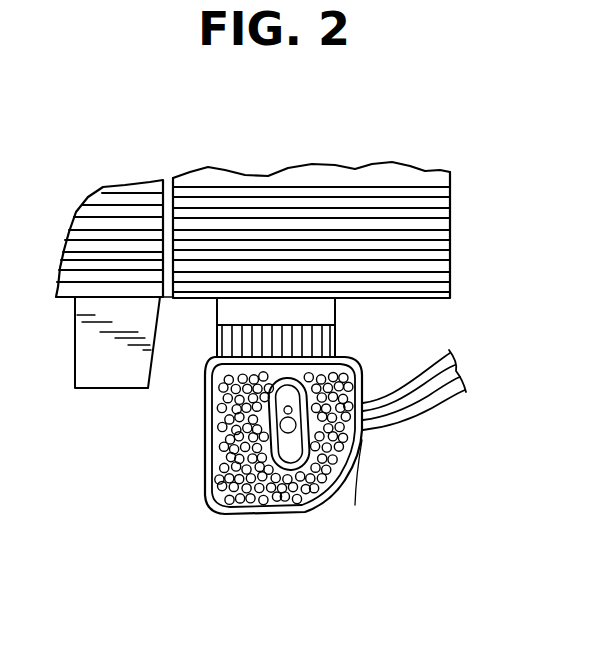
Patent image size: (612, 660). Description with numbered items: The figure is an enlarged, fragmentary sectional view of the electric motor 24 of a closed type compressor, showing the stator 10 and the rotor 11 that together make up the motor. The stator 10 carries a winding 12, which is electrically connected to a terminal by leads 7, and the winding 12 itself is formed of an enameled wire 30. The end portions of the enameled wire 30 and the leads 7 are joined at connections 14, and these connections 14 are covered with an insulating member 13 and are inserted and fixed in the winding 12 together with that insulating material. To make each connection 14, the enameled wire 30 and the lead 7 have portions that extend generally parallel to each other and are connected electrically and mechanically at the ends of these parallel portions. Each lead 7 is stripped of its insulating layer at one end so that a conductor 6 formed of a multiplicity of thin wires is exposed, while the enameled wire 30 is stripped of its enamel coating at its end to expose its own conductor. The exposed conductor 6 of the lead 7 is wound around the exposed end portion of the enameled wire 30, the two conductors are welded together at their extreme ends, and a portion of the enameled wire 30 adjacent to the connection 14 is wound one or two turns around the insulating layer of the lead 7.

The stator 10 is at (403, 170).
The rotor 11 is at (140, 178).
The electric motor 24 is at (296, 141).
The winding 12 is at (257, 518).
The connection 14 is at (285, 411).
The insulating member 13 is at (289, 470).
The enameled wire 30 is at (296, 425).
The lead 7 is at (423, 407).
The conductor 6 is at (361, 490).